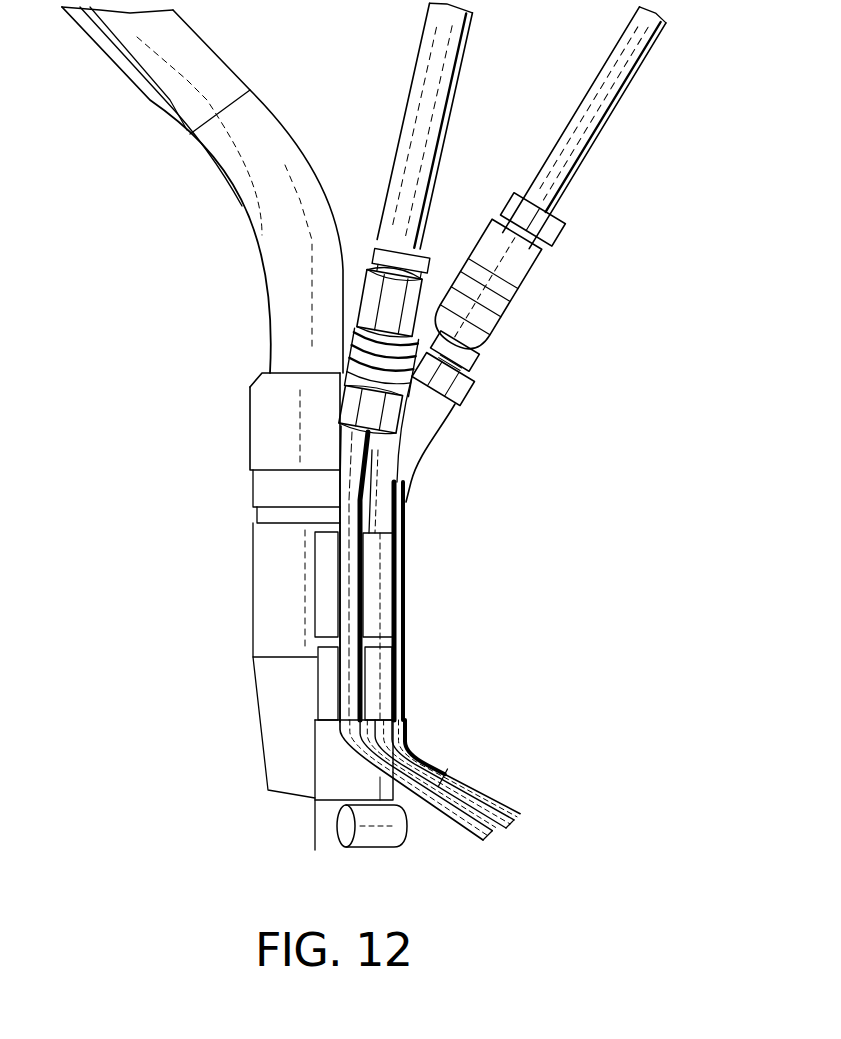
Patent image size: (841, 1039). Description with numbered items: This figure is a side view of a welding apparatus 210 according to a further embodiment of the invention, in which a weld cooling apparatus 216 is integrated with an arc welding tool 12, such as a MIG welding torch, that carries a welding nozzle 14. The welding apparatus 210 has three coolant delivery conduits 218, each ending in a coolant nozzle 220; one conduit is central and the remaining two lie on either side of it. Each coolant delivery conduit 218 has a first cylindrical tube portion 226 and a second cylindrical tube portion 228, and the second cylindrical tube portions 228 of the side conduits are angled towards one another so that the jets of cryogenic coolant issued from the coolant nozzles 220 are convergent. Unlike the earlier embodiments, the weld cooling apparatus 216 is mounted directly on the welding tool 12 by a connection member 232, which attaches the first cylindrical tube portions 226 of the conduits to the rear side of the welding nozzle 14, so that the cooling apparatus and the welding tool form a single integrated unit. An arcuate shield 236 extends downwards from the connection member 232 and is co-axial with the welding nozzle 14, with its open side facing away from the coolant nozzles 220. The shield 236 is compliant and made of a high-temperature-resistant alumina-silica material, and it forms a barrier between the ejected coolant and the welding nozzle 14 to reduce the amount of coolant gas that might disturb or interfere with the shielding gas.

The arc welding tool 12 is at (238, 210).
The welding nozzle 14 is at (267, 548).
The welding apparatus 210 is at (524, 558).
The weld cooling apparatus 216 is at (410, 489).
The coolant delivery conduit 218 is at (463, 81).
The coolant nozzle 220 is at (472, 779).
The first cylindrical tube portion 226 is at (406, 595).
The second cylindrical tube portion 228 is at (410, 745).
The connection member 232 is at (325, 591).
The arcuate shield 236 is at (380, 838).